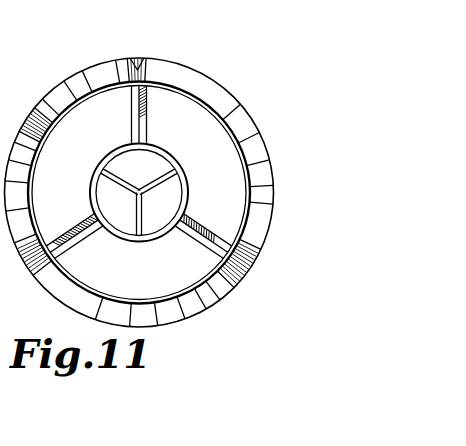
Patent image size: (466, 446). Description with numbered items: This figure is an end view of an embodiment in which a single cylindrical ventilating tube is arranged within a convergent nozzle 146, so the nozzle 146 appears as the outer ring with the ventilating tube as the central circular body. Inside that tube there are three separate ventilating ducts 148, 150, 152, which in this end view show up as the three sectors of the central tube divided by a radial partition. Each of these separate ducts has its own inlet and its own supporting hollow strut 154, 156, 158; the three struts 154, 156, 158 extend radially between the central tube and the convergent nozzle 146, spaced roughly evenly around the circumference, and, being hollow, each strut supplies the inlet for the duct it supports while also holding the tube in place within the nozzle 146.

The convergent nozzle 146 is at (252, 124).
The ventilating duct 148 is at (168, 203).
The ventilating duct 150 is at (152, 163).
The ventilating duct 152 is at (123, 219).
The hollow strut 154 is at (138, 57).
The hollow strut 156 is at (247, 268).
The hollow strut 158 is at (28, 256).